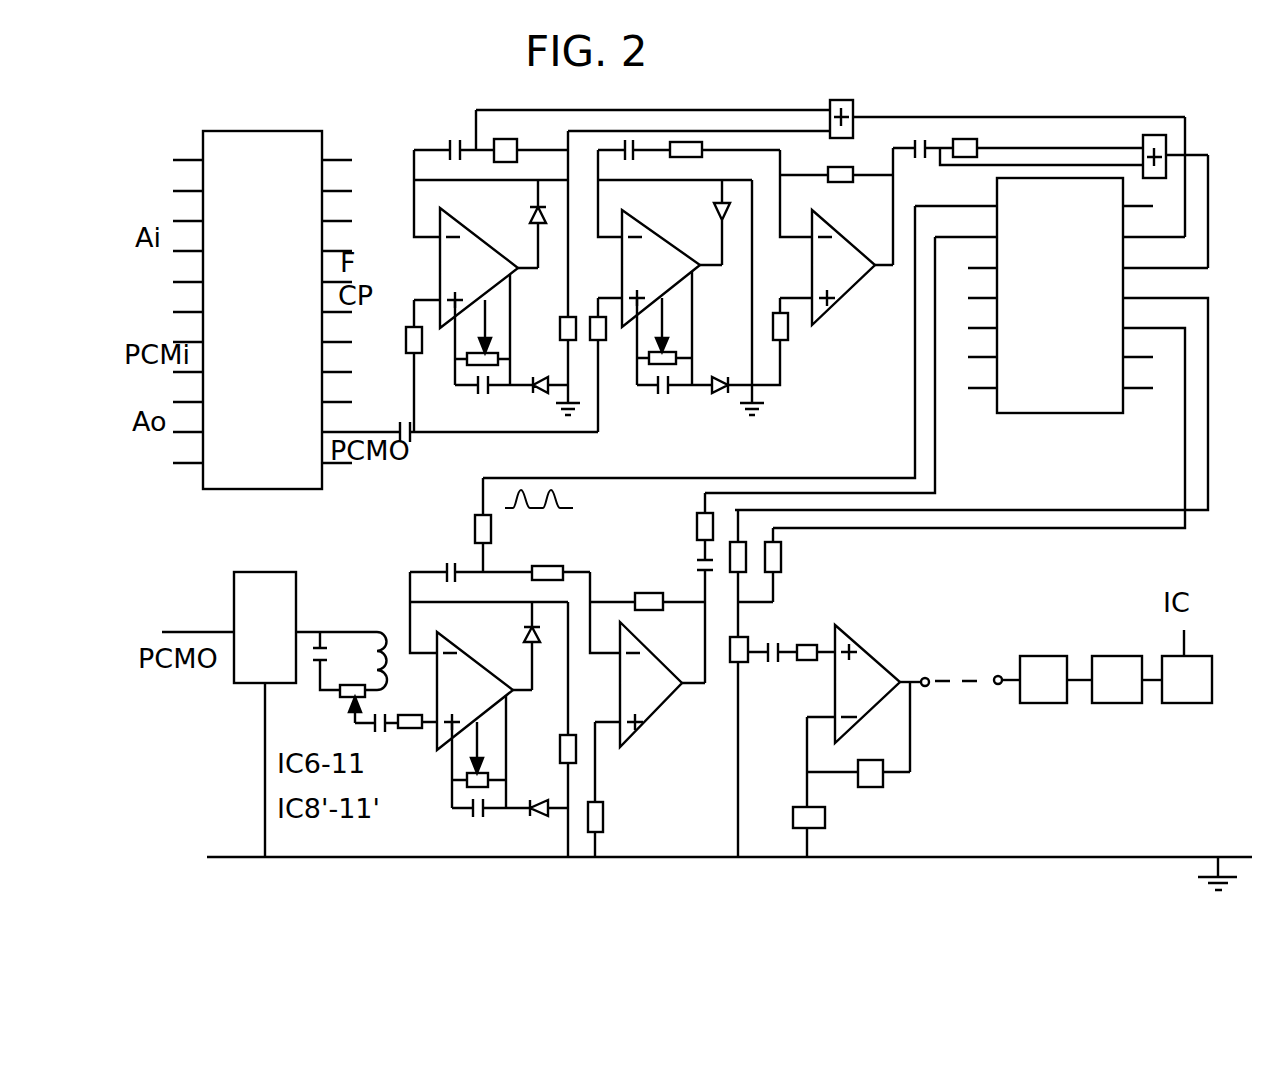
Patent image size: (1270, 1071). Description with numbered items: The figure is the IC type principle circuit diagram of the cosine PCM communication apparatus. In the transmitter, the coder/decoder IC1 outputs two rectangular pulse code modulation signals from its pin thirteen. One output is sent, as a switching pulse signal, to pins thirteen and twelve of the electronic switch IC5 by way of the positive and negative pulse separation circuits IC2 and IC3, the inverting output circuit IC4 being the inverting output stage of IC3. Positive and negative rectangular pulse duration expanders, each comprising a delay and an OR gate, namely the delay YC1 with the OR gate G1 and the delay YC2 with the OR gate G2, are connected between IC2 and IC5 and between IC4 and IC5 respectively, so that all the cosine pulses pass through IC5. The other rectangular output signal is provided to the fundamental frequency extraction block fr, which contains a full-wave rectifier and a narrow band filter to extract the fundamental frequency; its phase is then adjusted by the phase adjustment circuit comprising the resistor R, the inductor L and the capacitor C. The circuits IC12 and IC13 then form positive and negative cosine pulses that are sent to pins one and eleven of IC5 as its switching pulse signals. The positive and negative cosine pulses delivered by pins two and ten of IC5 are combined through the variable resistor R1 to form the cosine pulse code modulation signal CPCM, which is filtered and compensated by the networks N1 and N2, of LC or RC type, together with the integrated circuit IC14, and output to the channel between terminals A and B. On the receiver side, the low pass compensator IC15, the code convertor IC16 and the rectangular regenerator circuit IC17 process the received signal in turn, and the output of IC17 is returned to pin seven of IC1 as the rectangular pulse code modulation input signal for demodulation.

The coder/decoder IC1 is at (262, 310).
The positive pulse separation circuit IC2 is at (493, 281).
The negative pulse separation circuit IC3 is at (701, 286).
The inverting output circuit IC4 is at (822, 266).
The electronic switch IC5 is at (845, 322).
The cosine pulse forming circuit IC12 is at (487, 667).
The cosine pulse forming circuit IC13 is at (654, 675).
The integrated circuit IC14 is at (875, 683).
The low pass compensator IC15 is at (1053, 702).
The code convertor IC16 is at (1124, 702).
The rectangular regenerator circuit IC17 is at (1193, 689).
The OR gate G1 is at (830, 108).
The OR gate G2 is at (1149, 192).
The delay YC1 is at (492, 136).
The delay YC2 is at (1018, 141).
The variable resistor R1 is at (761, 675).
The LC or RC network N1 is at (789, 810).
The LC or RC network N2 is at (876, 790).
The cosine pulse code modulation signal CPCM is at (790, 632).
The channel terminal A is at (927, 706).
The channel terminal B is at (999, 703).
The fundamental frequency extraction circuit fr is at (269, 714).
The capacitor C is at (320, 643).
The inductor L is at (376, 642).
The resistor R is at (352, 687).